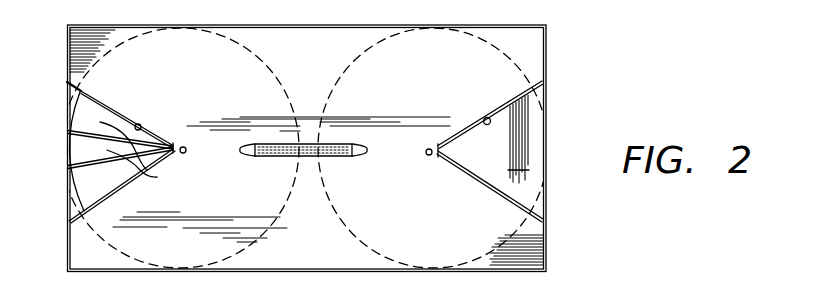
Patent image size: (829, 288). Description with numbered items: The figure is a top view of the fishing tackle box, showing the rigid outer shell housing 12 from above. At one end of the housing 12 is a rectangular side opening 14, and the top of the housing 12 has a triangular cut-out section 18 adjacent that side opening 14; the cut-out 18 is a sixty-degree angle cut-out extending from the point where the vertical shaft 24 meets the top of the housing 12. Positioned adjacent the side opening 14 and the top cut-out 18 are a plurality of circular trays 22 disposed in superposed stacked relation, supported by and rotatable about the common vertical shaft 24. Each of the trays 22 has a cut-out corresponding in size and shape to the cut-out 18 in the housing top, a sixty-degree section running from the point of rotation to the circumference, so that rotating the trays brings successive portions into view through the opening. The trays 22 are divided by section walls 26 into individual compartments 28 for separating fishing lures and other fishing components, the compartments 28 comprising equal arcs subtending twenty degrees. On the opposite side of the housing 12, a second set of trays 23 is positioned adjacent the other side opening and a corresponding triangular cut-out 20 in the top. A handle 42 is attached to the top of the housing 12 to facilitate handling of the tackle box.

The rigid outer shell housing 12 is at (318, 64).
The rectangular opening 14 is at (522, 169).
The triangular cut-out section 18 is at (485, 118).
The triangular cut-out 20 is at (141, 124).
The circular trays 22 is at (505, 64).
The trays 23 is at (76, 104).
The common vertical shaft 24 is at (424, 156).
The section walls 26 is at (87, 137).
The individual compartments 28 is at (150, 172).
The handle 42 is at (283, 156).